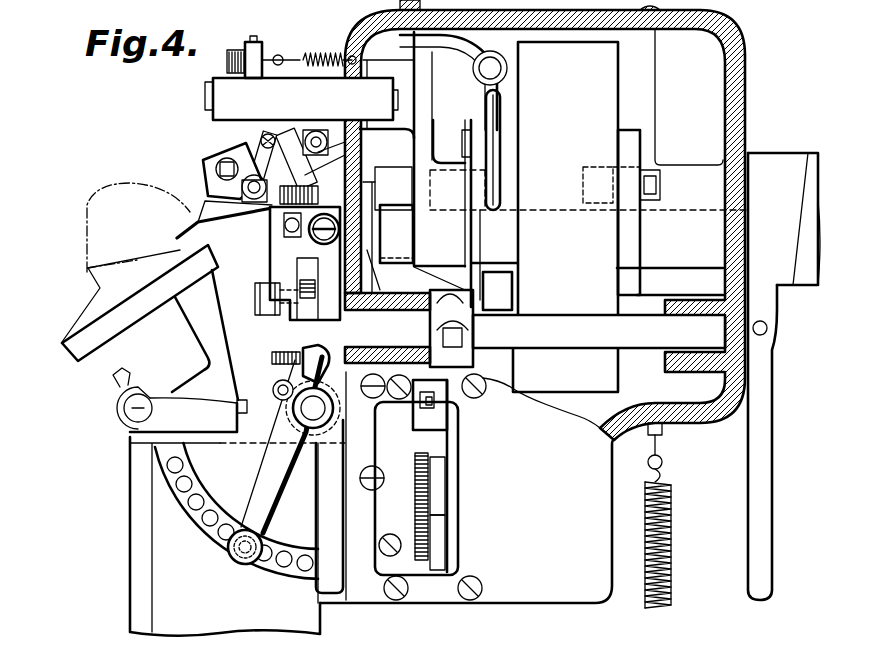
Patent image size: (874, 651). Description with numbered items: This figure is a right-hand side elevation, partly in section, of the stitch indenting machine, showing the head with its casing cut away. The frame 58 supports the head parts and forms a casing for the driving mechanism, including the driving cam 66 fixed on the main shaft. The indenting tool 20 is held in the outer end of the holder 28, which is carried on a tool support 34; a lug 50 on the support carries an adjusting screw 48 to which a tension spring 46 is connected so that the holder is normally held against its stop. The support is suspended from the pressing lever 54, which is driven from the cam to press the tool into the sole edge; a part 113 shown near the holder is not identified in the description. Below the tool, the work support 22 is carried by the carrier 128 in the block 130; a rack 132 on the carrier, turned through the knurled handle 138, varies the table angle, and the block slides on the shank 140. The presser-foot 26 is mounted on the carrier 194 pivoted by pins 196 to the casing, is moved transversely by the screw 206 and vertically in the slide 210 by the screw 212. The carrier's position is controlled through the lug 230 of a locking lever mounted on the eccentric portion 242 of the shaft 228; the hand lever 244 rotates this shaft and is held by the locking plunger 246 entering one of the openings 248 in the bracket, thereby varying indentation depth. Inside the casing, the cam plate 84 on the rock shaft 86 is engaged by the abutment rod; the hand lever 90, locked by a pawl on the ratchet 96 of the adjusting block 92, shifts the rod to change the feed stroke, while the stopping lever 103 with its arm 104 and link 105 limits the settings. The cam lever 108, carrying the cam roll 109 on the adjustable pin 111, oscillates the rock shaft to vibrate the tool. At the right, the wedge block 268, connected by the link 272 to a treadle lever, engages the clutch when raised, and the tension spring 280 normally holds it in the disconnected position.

The indenting tool 20 is at (193, 208).
The work support 22 is at (185, 272).
The presser-foot 26 is at (207, 218).
The holder 28 is at (214, 153).
The tool support 34 is at (237, 133).
The tension spring 46 is at (306, 57).
The adjusting screw 48 is at (228, 62).
The lug 50 is at (248, 52).
The pressing lever 54 is at (217, 113).
The frame 58 is at (368, 45).
The driving cam 66 is at (603, 80).
The cam plate 84 is at (403, 245).
The rock shaft 86 is at (573, 325).
The hand lever 90 is at (437, 467).
The adjusting block 92 is at (428, 478).
The ratchet 96 is at (428, 503).
The stopping lever 103 is at (468, 57).
The arm 104 is at (500, 178).
The link 105 is at (477, 243).
The cam lever 108 is at (637, 142).
The cam roll 109 is at (593, 167).
The pin 111 is at (660, 185).
The pivot pin 113 is at (258, 172).
The carrier 128 is at (140, 342).
The block 130 is at (167, 437).
The rack 132 is at (118, 383).
The knurled handle 138 is at (135, 410).
The shank 140 is at (160, 443).
The carrier 194 is at (330, 317).
The pins 196 is at (317, 240).
The screw 206 is at (412, 162).
The slide 210 is at (305, 315).
The screw 212 is at (293, 350).
The shaft 228 is at (260, 440).
The lug 230 is at (330, 345).
The eccentric portion 242 is at (283, 373).
The hand lever 244 is at (263, 463).
The locking plunger 246 is at (242, 567).
The openings 248 is at (220, 525).
The wedge block 268 is at (808, 135).
The link 272 is at (758, 487).
The tension spring 280 is at (672, 518).